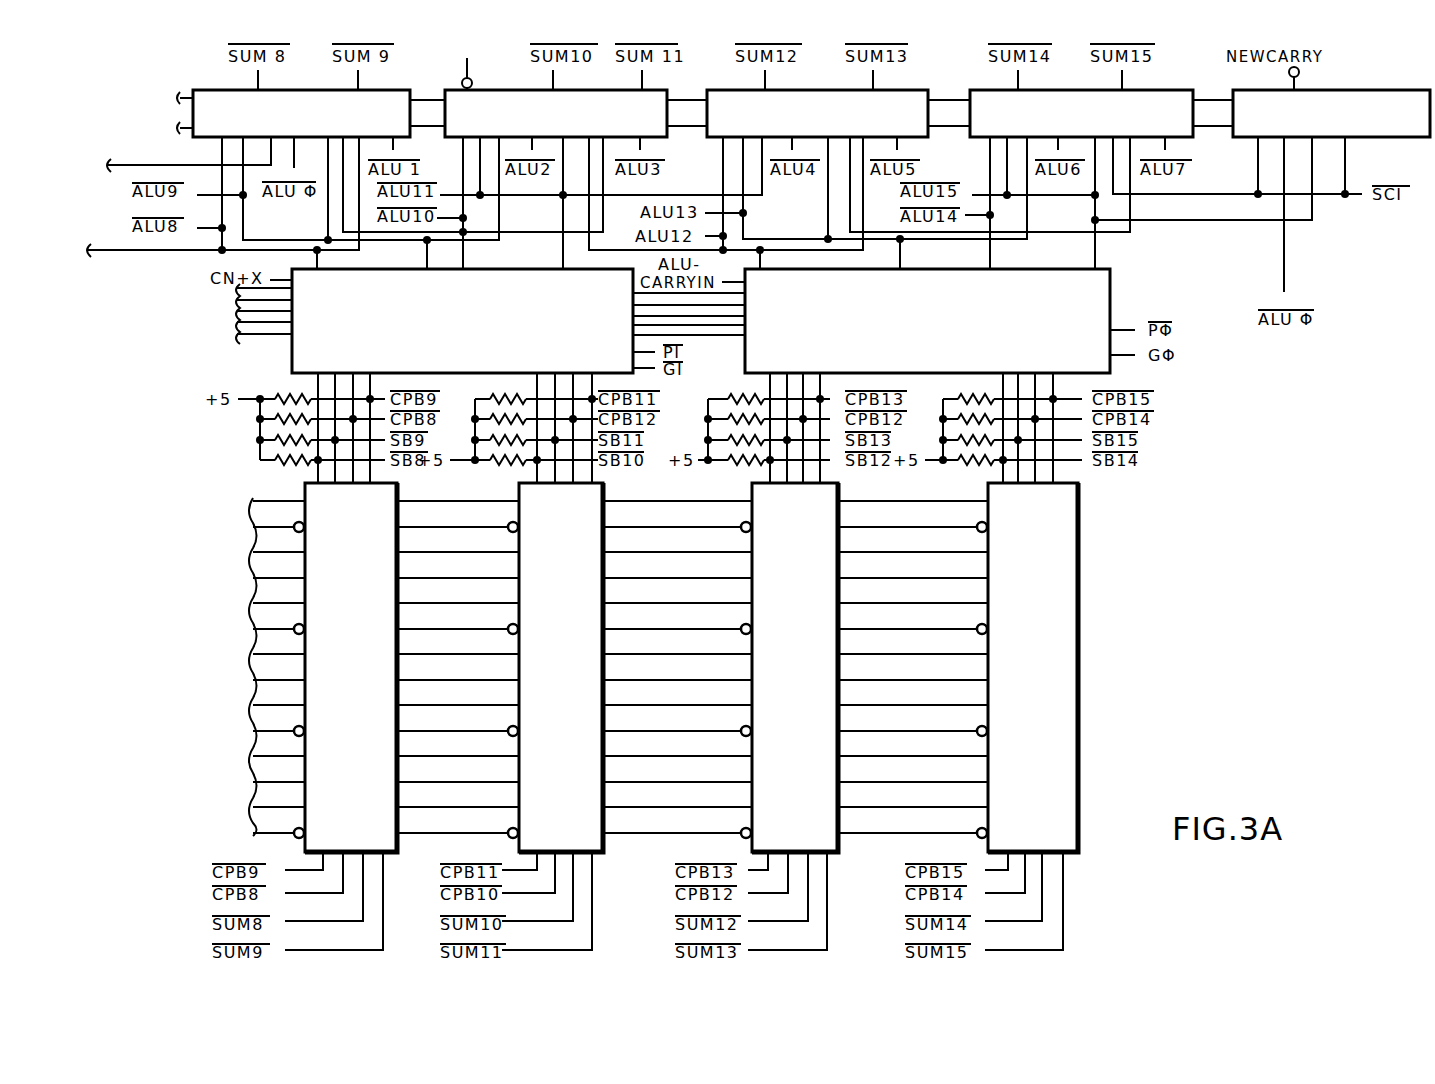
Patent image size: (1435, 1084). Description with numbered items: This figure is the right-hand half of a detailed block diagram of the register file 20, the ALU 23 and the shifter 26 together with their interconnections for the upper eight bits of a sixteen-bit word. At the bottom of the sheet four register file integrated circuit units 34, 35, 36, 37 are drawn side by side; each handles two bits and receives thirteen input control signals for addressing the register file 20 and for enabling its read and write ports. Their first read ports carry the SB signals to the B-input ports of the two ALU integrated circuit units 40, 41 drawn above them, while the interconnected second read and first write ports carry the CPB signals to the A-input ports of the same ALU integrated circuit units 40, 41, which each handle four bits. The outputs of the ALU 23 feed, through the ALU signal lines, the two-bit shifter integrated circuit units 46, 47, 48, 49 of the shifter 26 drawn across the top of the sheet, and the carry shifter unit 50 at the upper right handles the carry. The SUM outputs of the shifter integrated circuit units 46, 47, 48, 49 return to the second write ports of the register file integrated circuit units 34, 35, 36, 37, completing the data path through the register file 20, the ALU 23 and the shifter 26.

The register file 20 is at (206, 688).
The ALU 23 is at (212, 314).
The shifter 26 is at (162, 129).
The register file integrated circuit unit 34 is at (361, 670).
The register file integrated circuit unit 35 is at (573, 670).
The register file integrated circuit unit 36 is at (805, 670).
The register file integrated circuit unit 37 is at (1044, 670).
The ALU integrated circuit unit 40 is at (464, 328).
The ALU integrated circuit unit 41 is at (930, 328).
The shifter integrated circuit unit 46 is at (292, 124).
The shifter integrated circuit unit 47 is at (562, 124).
The shifter integrated circuit unit 48 is at (807, 124).
The shifter integrated circuit unit 49 is at (1062, 124).
The carry shifter unit 50 is at (1337, 124).